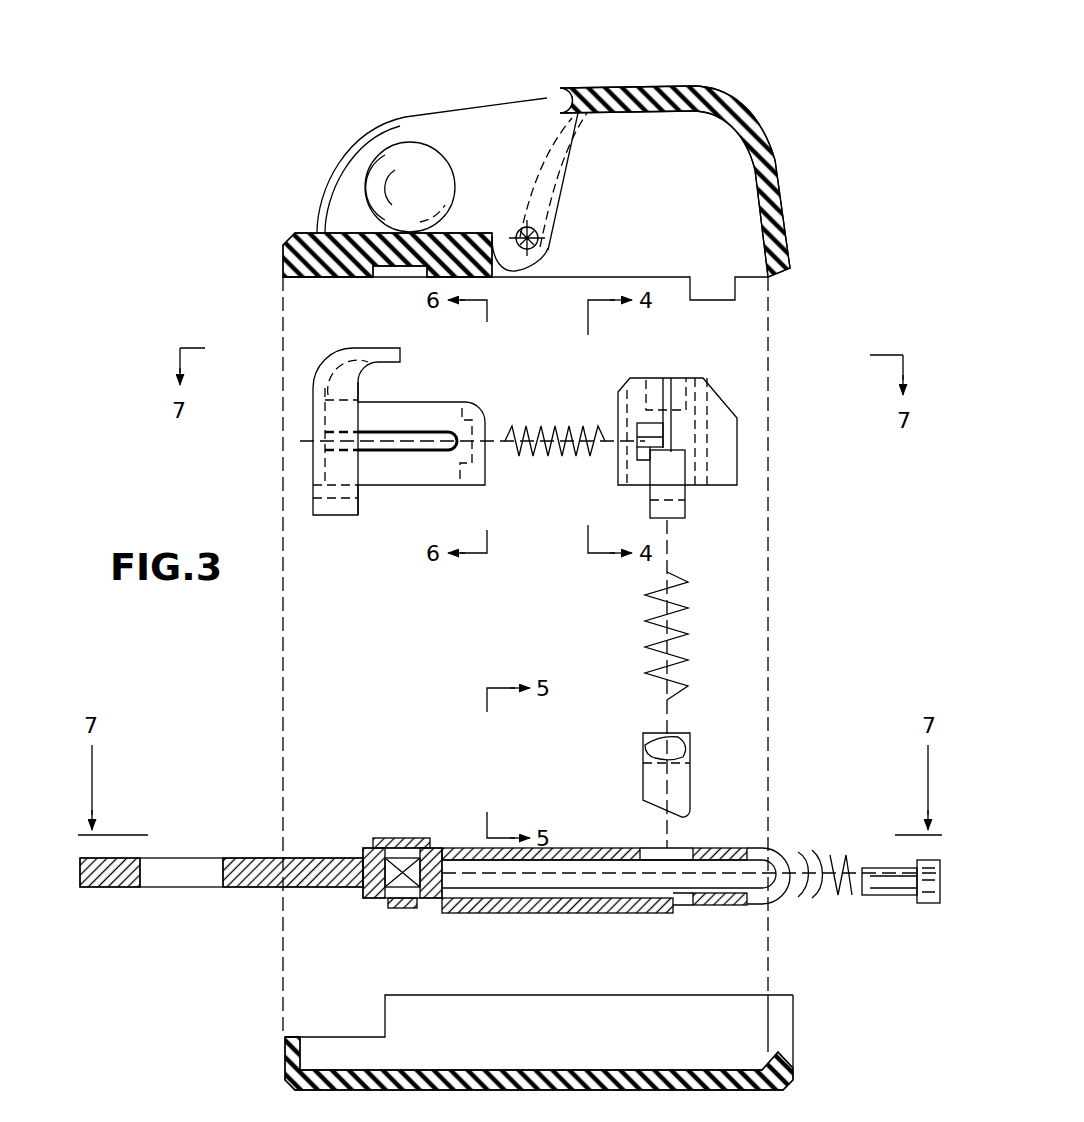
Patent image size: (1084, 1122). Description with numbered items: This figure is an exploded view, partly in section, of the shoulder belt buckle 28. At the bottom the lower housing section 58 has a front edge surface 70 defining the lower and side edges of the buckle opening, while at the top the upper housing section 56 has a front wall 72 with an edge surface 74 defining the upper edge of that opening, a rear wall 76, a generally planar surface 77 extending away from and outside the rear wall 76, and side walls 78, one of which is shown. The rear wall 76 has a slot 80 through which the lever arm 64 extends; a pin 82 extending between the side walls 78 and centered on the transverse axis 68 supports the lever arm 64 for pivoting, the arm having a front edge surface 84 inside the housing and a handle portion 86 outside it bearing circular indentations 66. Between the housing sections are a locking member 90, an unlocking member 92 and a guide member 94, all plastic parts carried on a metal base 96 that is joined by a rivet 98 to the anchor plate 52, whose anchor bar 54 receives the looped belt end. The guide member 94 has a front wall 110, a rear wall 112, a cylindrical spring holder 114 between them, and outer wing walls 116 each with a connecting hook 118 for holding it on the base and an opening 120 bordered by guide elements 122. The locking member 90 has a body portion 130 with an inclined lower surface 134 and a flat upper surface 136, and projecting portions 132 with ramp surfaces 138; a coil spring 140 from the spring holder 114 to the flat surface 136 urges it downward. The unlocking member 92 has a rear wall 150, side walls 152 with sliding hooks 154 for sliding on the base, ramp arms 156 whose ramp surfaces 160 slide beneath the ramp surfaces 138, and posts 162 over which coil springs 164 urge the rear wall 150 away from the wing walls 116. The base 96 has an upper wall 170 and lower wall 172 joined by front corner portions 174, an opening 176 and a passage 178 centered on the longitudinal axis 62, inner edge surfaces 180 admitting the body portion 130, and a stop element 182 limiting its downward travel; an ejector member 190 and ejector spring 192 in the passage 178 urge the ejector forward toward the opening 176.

The shoulder belt buckle 28 is at (780, 346).
The anchor plate 52 is at (266, 852).
The anchor bar 54 is at (103, 878).
The upper housing section 56 is at (782, 152).
The lower housing section 58 is at (800, 1080).
The longitudinal axis 62 is at (850, 865).
The lever arm 64 is at (360, 135).
The circular indentations 66 is at (385, 185).
The transverse axis 68 is at (548, 262).
The front edge surface 70 is at (790, 1045).
The front wall 72 is at (776, 222).
The edge surface 74 is at (782, 270).
The rear wall 76 is at (582, 100).
The generally planar surface 77 is at (294, 241).
The side walls 78 is at (703, 133).
The slot 80 is at (510, 165).
The pin 82 is at (542, 225).
The front edge surface 84 is at (590, 125).
The handle portion 86 is at (345, 184).
The locking member 90 is at (694, 758).
The unlocking member 92 is at (313, 440).
The guide member 94 is at (742, 450).
The base 96 is at (468, 846).
The rivet 98 is at (400, 838).
The front wall 110 is at (715, 410).
The rear wall 112 is at (620, 405).
The cylindrical spring holder 114 is at (648, 380).
The outer wing walls 116 is at (683, 400).
The connecting hook 118 is at (690, 508).
The opening 120 is at (637, 430).
The guide elements 122 is at (637, 450).
The body portion 130 is at (653, 775).
The projecting portions 132 is at (655, 740).
The inclined lower surface 134 is at (650, 800).
The flat upper surface 136 is at (700, 752).
The ramp surface 138 is at (643, 745).
The coil spring 140 is at (640, 625).
The rear wall 150 is at (313, 392).
The side walls 152 is at (320, 410).
The sliding hook 154 is at (333, 506).
The ramp arms 156 is at (497, 425).
The ramp surface 160 is at (385, 440).
The posts 162 is at (418, 438).
The coil springs 164 is at (517, 452).
The upper wall 170 is at (720, 848).
The lower wall 172 is at (725, 905).
The front corner portions 174 is at (772, 848).
The opening 176 is at (787, 860).
The passage 178 is at (706, 875).
The inner edge surface 180 is at (652, 856).
The stop element 182 is at (600, 913).
The ejector member 190 is at (870, 895).
The ejector spring 192 is at (832, 888).